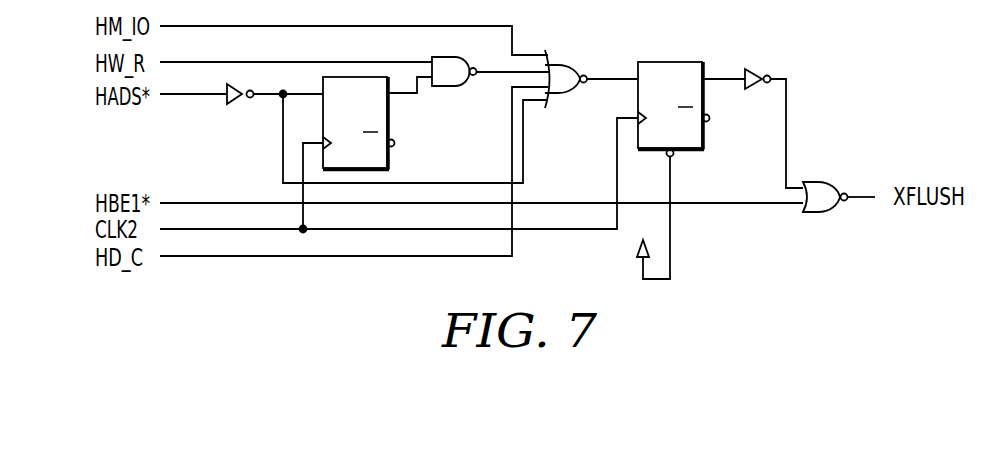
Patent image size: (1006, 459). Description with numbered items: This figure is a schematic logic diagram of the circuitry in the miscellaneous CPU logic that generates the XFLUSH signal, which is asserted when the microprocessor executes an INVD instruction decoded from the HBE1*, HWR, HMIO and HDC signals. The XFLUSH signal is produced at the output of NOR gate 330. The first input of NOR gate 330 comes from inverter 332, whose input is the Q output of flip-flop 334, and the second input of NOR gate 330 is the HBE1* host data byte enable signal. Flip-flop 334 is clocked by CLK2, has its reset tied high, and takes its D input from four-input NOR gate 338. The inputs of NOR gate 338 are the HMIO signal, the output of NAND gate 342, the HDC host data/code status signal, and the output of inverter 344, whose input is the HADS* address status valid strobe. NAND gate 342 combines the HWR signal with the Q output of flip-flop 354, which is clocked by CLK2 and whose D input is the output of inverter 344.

The NOR gate 330 is at (815, 180).
The inverter 332 is at (752, 67).
The flip-flop 334 is at (687, 62).
The four input NOR gate 338 is at (558, 62).
The NAND gate 342 is at (454, 87).
The inverter 344 is at (238, 105).
The flip-flop 354 is at (392, 128).